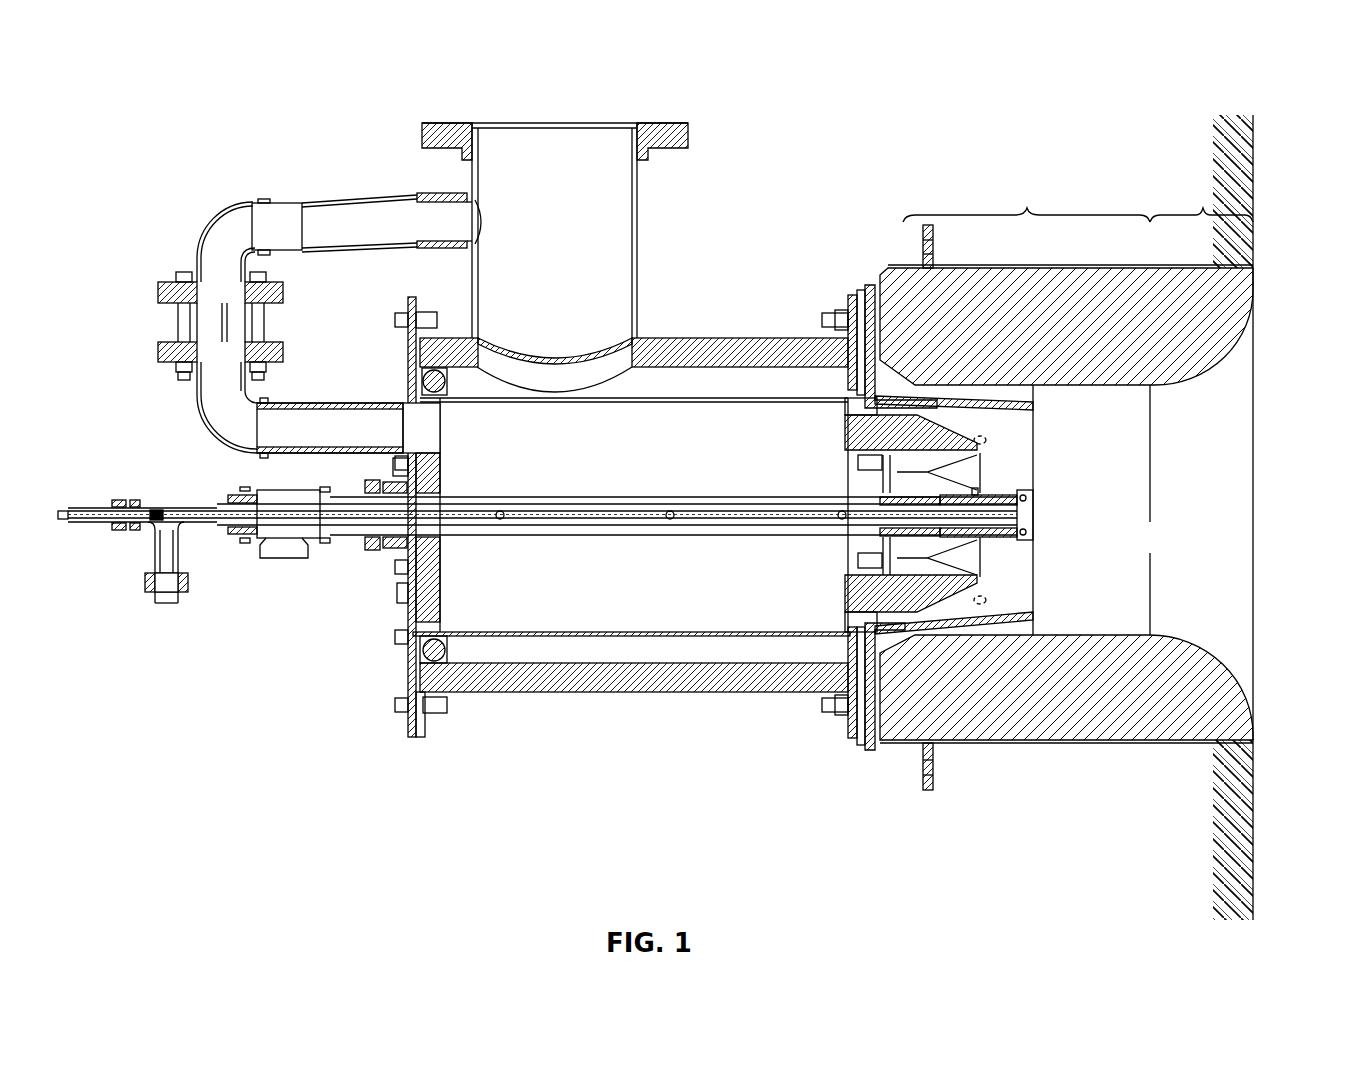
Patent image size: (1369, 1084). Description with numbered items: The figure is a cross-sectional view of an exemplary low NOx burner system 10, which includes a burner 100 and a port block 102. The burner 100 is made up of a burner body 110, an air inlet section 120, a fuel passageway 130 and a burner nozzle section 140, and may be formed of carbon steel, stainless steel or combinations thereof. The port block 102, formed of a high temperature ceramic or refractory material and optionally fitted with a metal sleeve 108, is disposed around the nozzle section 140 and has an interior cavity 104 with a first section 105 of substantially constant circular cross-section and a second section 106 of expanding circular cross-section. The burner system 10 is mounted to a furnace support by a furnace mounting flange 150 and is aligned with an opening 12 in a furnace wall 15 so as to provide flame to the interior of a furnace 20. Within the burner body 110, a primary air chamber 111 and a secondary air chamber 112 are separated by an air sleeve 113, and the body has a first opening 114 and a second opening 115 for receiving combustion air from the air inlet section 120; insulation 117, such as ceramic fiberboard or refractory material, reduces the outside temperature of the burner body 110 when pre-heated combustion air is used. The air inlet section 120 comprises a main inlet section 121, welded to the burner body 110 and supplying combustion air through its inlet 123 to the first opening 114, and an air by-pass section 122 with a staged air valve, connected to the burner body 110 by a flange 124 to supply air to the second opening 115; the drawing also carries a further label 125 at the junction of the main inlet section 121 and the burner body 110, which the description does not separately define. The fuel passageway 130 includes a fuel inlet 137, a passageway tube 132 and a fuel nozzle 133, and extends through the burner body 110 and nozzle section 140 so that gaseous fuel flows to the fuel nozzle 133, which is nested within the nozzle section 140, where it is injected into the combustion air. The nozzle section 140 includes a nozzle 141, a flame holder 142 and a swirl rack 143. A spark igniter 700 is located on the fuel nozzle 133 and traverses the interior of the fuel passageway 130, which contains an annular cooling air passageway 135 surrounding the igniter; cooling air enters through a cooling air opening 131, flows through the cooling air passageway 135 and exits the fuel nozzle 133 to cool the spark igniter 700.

The burner system 10 is at (236, 146).
The opening 12 is at (1265, 690).
The furnace wall 15 is at (1255, 148).
The furnace 20 is at (1270, 494).
The burner 100 is at (782, 120).
The port block 102 is at (1165, 738).
The interior cavity 104 is at (1104, 510).
The first section 105 is at (1026, 199).
The second section 106 is at (1201, 199).
The metal sleeve 108 is at (978, 752).
The burner body 110 is at (546, 736).
The primary air chamber 111 is at (720, 605).
The secondary air chamber 112 is at (772, 383).
The air sleeve 113 is at (552, 640).
The first opening 114 is at (614, 347).
The second opening 115 is at (424, 430).
The insulation 117 is at (426, 575).
The air inlet section 120 is at (436, 177).
The main inlet section 121 is at (638, 210).
The air by-pass section 122 is at (206, 221).
The inlet 123 is at (606, 120).
The flange 124 is at (394, 465).
The pipe opening 125 is at (578, 347).
The fuel passageway 130 is at (222, 491).
The cooling air opening 131 is at (165, 608).
The passageway tube 132 is at (672, 494).
The fuel nozzle 133 is at (1036, 500).
The cooling air passageway 135 is at (566, 512).
The fuel inlet 137 is at (290, 565).
The burner nozzle section 140 is at (1008, 588).
The nozzle 141 is at (846, 438).
The flame holder 142 is at (1012, 398).
The swirl rack 143 is at (888, 380).
The furnace mounting flange 150 is at (918, 778).
The spark igniter 700 is at (1048, 509).